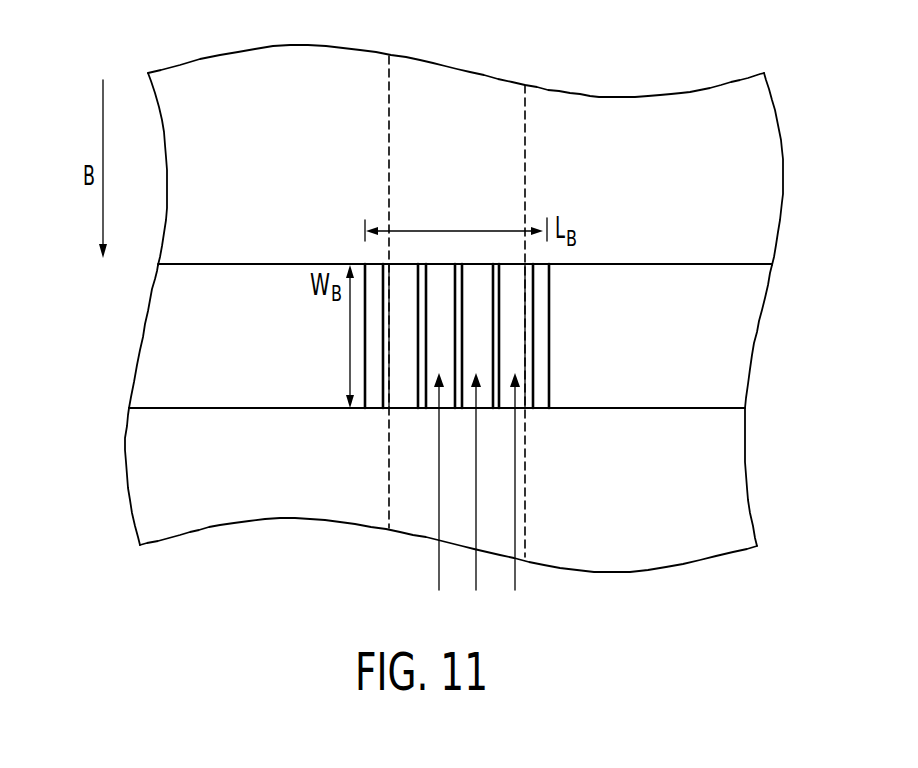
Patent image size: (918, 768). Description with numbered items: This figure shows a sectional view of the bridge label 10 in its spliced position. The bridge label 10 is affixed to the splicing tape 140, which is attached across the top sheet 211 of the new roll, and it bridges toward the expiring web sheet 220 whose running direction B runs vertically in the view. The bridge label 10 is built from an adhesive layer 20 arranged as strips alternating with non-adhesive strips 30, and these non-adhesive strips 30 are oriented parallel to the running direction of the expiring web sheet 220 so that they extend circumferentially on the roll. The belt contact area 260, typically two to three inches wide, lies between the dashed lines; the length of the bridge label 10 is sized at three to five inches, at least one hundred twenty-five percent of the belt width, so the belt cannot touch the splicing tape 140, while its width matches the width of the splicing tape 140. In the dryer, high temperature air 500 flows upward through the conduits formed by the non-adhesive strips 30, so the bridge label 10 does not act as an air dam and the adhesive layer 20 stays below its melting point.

The bridge label 10 is at (341, 352).
The adhesive layer 20 is at (495, 327).
The non-adhesive strips 30 is at (513, 366).
The splicing tape 140 is at (272, 323).
The top sheet 211 is at (667, 187).
The expiring web sheet 220 is at (647, 504).
The belt contact area 260 is at (459, 183).
The high temperature air 500 is at (437, 570).